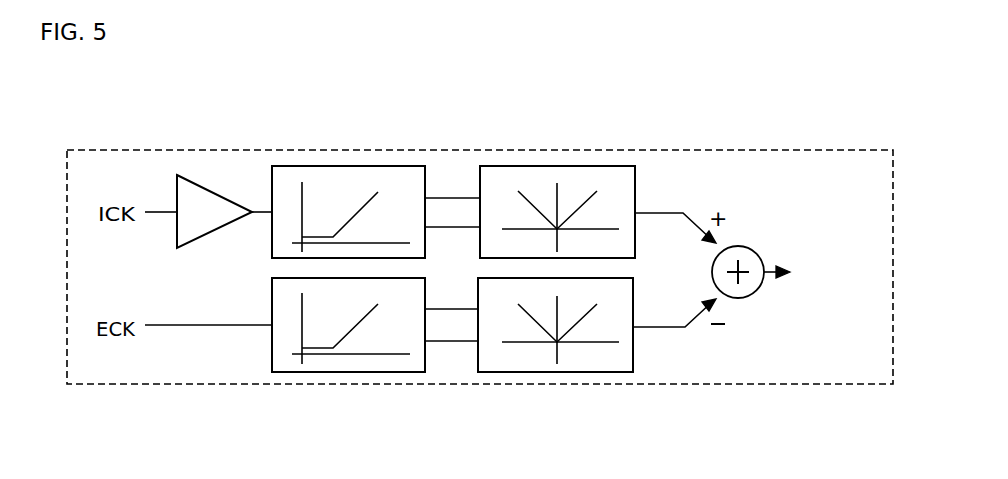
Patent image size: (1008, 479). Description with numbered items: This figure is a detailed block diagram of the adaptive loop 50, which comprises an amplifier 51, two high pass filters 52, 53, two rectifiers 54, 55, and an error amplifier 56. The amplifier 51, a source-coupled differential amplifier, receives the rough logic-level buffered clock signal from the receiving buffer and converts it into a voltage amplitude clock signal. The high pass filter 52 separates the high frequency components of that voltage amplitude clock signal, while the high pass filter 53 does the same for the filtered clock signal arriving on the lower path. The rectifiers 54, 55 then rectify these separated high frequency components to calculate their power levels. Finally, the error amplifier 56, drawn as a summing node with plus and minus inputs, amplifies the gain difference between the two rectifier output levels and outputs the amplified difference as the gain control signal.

The adaptive loop 50 is at (735, 384).
The amplifier 51 is at (194, 175).
The high pass filter 52 is at (349, 166).
The high pass filter 53 is at (348, 372).
The rectifier 54 is at (556, 166).
The rectifier 55 is at (560, 372).
The error amplifier 56 is at (755, 248).